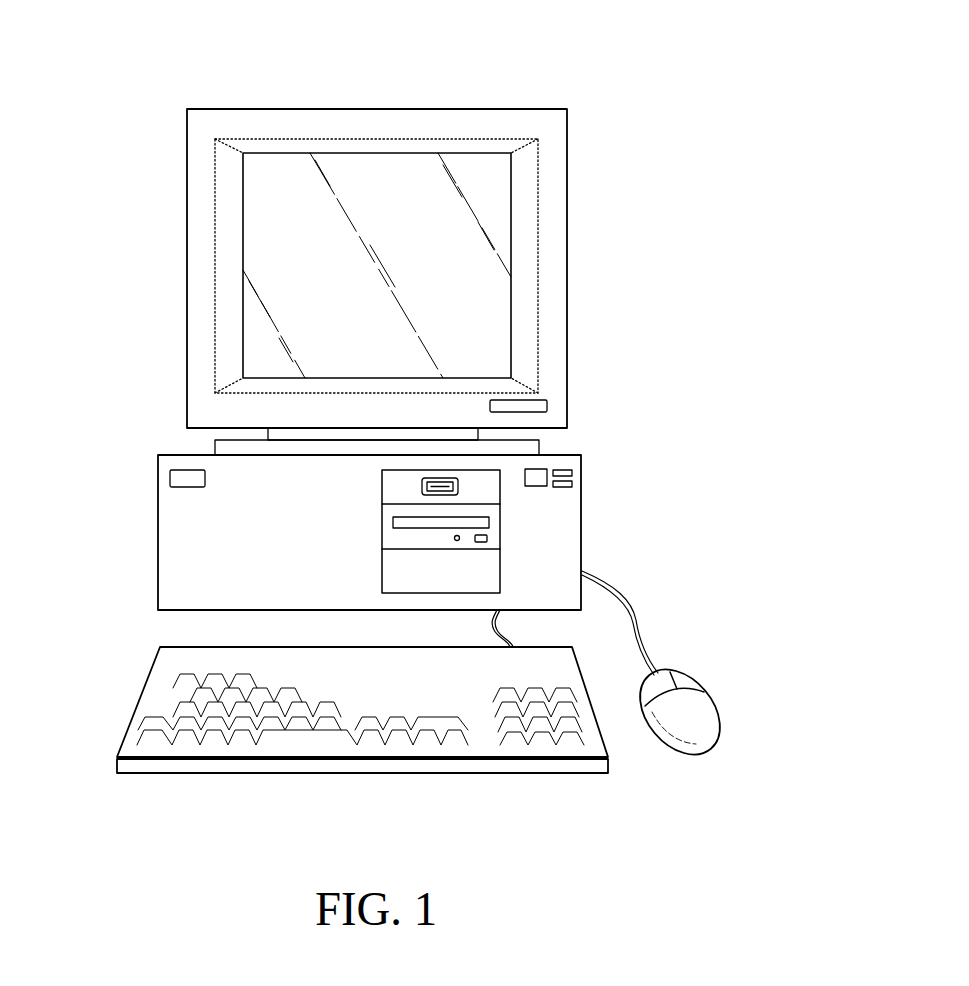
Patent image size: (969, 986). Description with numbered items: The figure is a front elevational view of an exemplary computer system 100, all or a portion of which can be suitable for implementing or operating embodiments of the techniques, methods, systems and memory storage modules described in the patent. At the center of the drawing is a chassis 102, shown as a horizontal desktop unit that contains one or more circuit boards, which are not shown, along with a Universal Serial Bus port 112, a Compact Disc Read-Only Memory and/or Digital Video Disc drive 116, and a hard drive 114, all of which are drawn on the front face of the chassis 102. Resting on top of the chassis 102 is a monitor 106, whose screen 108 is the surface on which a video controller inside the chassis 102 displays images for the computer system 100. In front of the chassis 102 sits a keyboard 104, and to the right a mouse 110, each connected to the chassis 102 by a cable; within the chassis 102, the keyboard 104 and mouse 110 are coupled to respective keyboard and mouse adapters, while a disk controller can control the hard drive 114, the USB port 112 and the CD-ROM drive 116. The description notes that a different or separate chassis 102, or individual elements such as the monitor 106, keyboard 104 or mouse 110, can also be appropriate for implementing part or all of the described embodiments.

The computer system 100 is at (564, 79).
The chassis 102 is at (158, 535).
The keyboard 104 is at (142, 698).
The monitor 106 is at (263, 108).
The screen 108 is at (292, 271).
The mouse 110 is at (702, 702).
The Universal Serial Bus (USB) port 112 is at (460, 483).
The hard drive 114 is at (492, 570).
The CD-ROM and/or DVD drive 116 is at (492, 528).